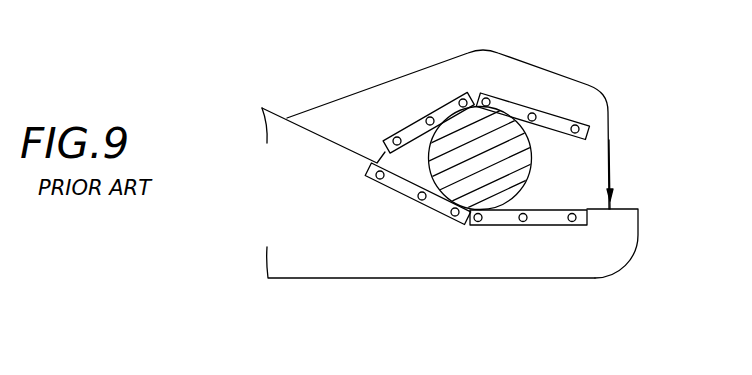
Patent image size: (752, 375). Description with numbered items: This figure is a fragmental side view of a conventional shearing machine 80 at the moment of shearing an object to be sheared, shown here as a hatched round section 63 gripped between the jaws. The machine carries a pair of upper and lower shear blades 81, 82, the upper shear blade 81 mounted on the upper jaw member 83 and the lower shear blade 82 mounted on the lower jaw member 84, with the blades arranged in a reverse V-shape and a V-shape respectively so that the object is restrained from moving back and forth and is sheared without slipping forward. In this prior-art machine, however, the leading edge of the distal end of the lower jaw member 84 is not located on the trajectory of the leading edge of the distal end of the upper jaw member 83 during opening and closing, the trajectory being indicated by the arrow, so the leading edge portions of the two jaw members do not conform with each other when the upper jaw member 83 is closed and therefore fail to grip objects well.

The shearing machine 80 is at (408, 290).
The upper shear blade 81 is at (563, 120).
The lower shear blade 82 is at (537, 218).
The upper jaw member 83 is at (383, 93).
The lower jaw member 84 is at (588, 257).
The rod 63 is at (457, 132).